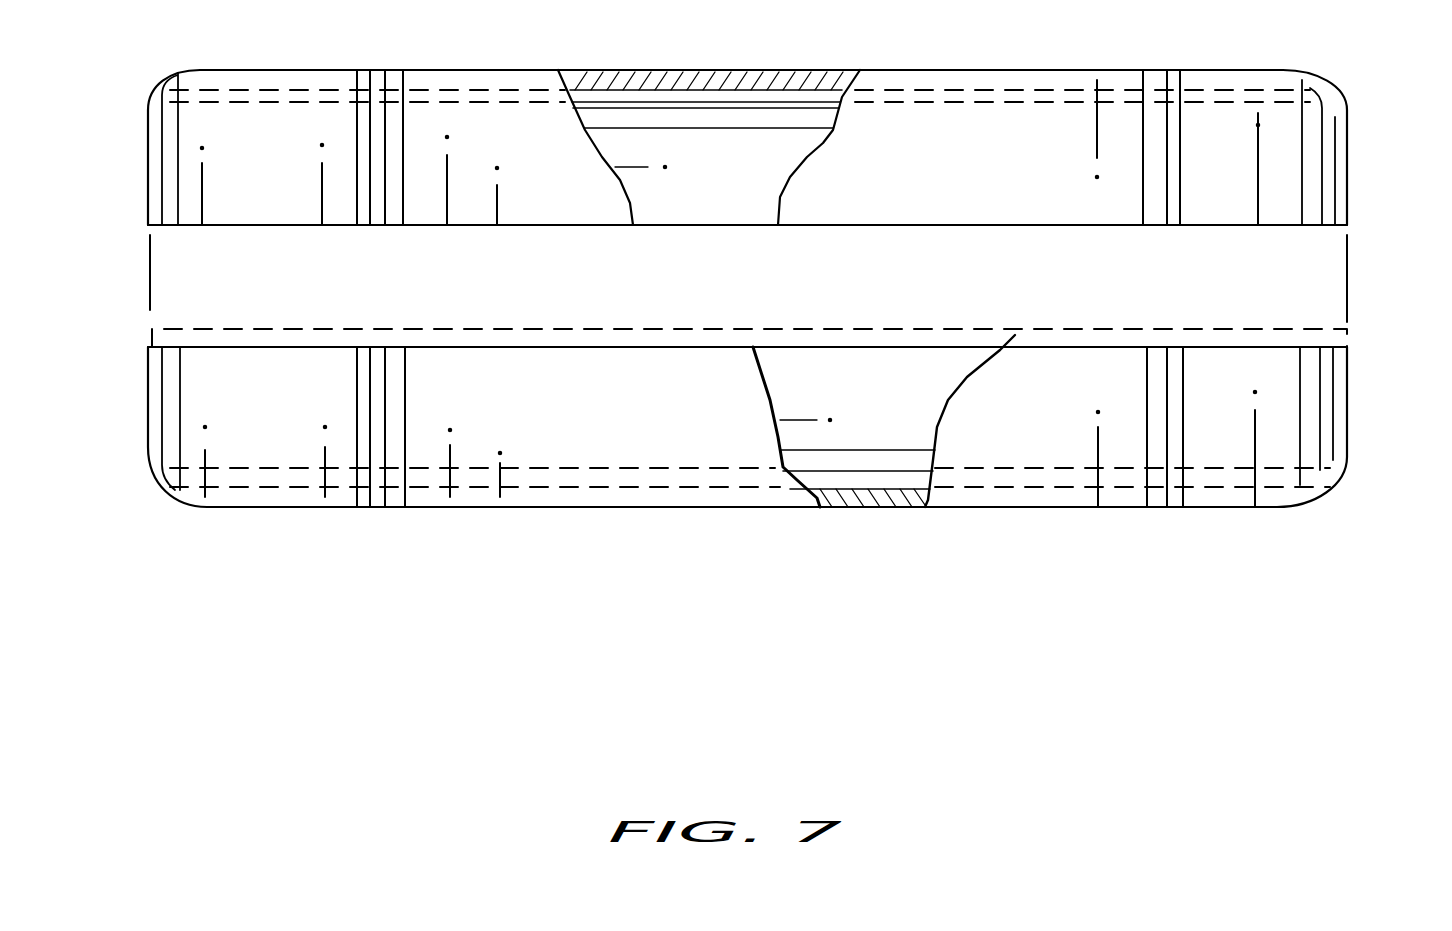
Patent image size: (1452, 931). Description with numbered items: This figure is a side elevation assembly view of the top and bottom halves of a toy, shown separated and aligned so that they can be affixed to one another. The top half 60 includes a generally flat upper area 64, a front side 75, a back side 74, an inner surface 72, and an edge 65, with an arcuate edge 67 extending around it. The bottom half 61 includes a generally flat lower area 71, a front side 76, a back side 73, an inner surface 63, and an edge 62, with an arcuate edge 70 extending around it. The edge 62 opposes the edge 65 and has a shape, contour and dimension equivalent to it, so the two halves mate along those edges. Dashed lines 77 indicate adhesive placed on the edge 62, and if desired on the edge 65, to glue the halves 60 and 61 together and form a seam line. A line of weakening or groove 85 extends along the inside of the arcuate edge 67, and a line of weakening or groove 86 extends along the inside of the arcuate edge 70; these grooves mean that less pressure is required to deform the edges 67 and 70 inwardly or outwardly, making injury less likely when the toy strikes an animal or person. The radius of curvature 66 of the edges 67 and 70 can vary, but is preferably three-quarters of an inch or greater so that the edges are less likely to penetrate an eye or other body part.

The half 60 is at (1130, 63).
The half 61 is at (1265, 518).
The edge 62 is at (892, 347).
The inner surface 63 is at (808, 378).
The generally flat upper area 64 is at (903, 72).
The edge 65 is at (1002, 228).
The radius of curvature 66 is at (1320, 112).
The arcuate edge 67 is at (167, 102).
The arcuate edge 70 is at (163, 483).
The generally flat lower area 71 is at (690, 507).
The inner surface 72 is at (807, 117).
The back side 73 is at (923, 367).
The back side 74 is at (687, 185).
The front side 75 is at (1017, 195).
The front side 76 is at (574, 432).
The dashed lines 77 is at (1190, 332).
The line of weakening or groove 85 is at (312, 104).
The line of weakening or groove 86 is at (283, 465).